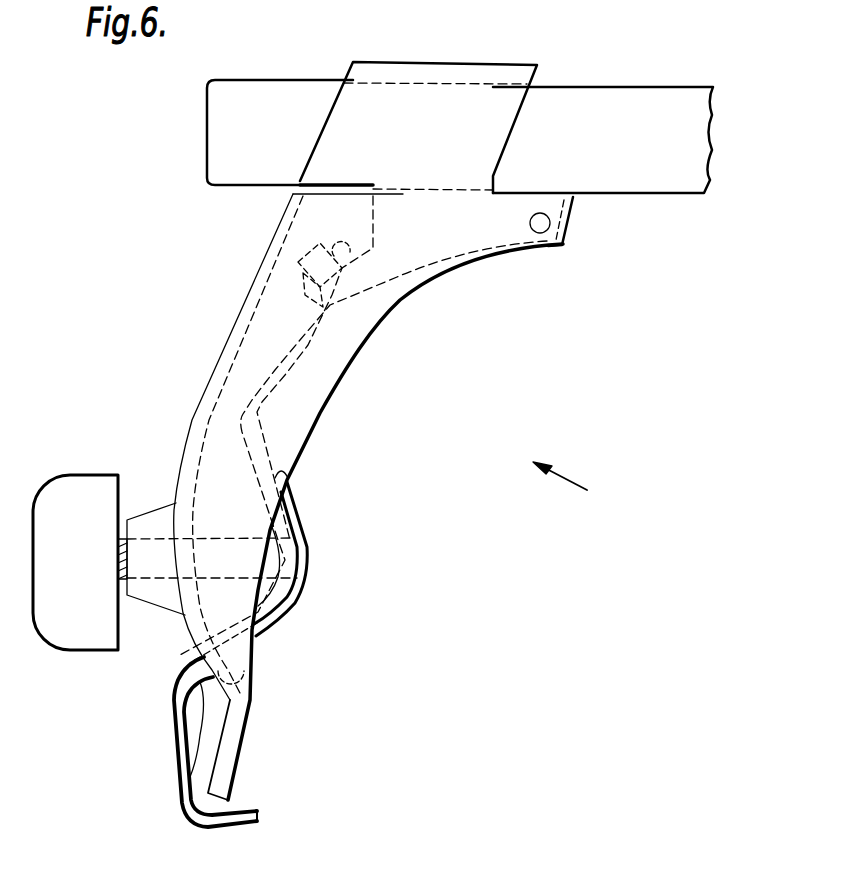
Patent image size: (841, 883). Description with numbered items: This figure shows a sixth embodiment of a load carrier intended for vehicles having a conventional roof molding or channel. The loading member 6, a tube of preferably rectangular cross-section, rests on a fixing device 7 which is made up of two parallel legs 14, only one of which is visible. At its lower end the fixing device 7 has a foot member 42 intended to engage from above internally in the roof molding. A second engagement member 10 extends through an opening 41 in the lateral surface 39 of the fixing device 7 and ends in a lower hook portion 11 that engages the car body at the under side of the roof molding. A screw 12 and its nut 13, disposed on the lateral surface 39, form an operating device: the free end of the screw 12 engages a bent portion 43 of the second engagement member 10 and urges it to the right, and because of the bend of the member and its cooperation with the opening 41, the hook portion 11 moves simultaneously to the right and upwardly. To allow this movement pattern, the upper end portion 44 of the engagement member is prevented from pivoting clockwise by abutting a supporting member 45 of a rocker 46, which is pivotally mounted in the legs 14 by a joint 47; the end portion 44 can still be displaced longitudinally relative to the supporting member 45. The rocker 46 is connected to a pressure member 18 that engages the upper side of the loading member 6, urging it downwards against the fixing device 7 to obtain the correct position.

The loading member 6 is at (608, 87).
The pressure member 18 is at (403, 65).
The rocker 46 is at (488, 228).
The joint 47 is at (541, 233).
The supporting member 45 is at (293, 262).
The upper end portion 44 is at (297, 305).
The lateral surface 39 is at (232, 340).
The leg 14 is at (313, 388).
The screw 12 is at (127, 563).
The nut 13 is at (165, 600).
The bent portion 43 is at (302, 553).
The opening 41 is at (217, 668).
The foot member 42 is at (235, 728).
The second engagement member 10 is at (175, 718).
The hook portion 11 is at (224, 826).
The fixing device 7 is at (573, 493).